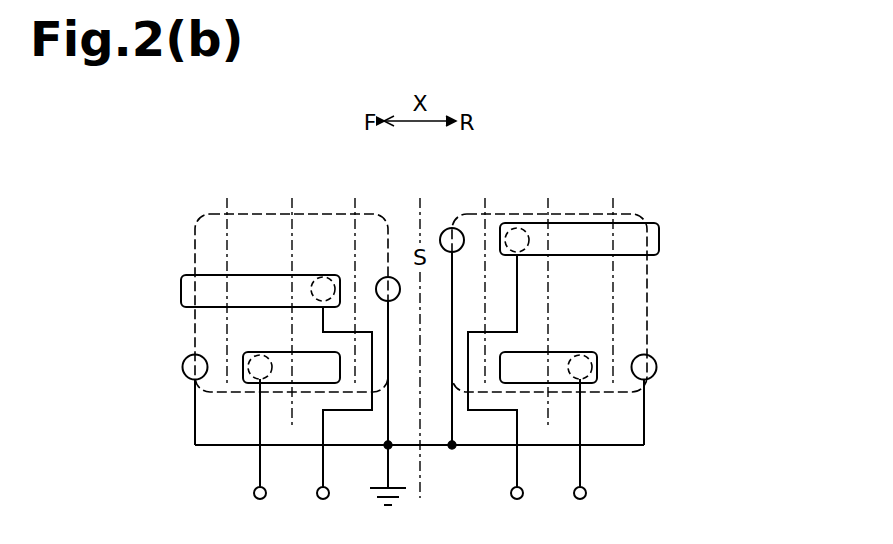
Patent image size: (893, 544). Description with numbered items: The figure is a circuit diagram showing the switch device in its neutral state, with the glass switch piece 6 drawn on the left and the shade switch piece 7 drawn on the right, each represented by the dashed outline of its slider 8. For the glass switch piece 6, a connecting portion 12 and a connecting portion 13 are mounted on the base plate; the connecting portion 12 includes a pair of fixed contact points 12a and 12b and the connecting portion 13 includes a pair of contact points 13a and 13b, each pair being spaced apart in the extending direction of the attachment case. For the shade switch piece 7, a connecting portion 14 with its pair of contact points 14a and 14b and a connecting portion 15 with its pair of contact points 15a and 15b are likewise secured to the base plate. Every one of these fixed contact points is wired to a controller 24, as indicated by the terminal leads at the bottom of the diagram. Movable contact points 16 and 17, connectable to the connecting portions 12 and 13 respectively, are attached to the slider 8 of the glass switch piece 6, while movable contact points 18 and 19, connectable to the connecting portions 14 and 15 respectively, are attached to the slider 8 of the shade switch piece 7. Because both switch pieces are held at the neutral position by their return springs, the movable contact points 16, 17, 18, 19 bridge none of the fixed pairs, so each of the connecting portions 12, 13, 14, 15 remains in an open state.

The glass switch piece 6 is at (165, 175).
The shade switch piece 7 is at (683, 170).
The slider 8 is at (195, 258).
The connecting portion 12 is at (112, 320).
The fixed contact point 12a is at (182, 368).
The fixed contact point 12b is at (252, 352).
The connecting portion 13 is at (292, 171).
The contact point 13a is at (323, 277).
The contact point 13b is at (388, 277).
The connecting portion 14 is at (722, 320).
The contact point 14a is at (590, 350).
The contact point 14b is at (657, 369).
The connecting portion 15 is at (422, 171).
The contact point 15a is at (452, 228).
The contact point 15b is at (517, 228).
The movable contact point 16 is at (283, 352).
The movable contact point 17 is at (258, 276).
The movable contact point 18 is at (572, 352).
The movable contact point 19 is at (593, 256).
The controller 24 is at (419, 520).